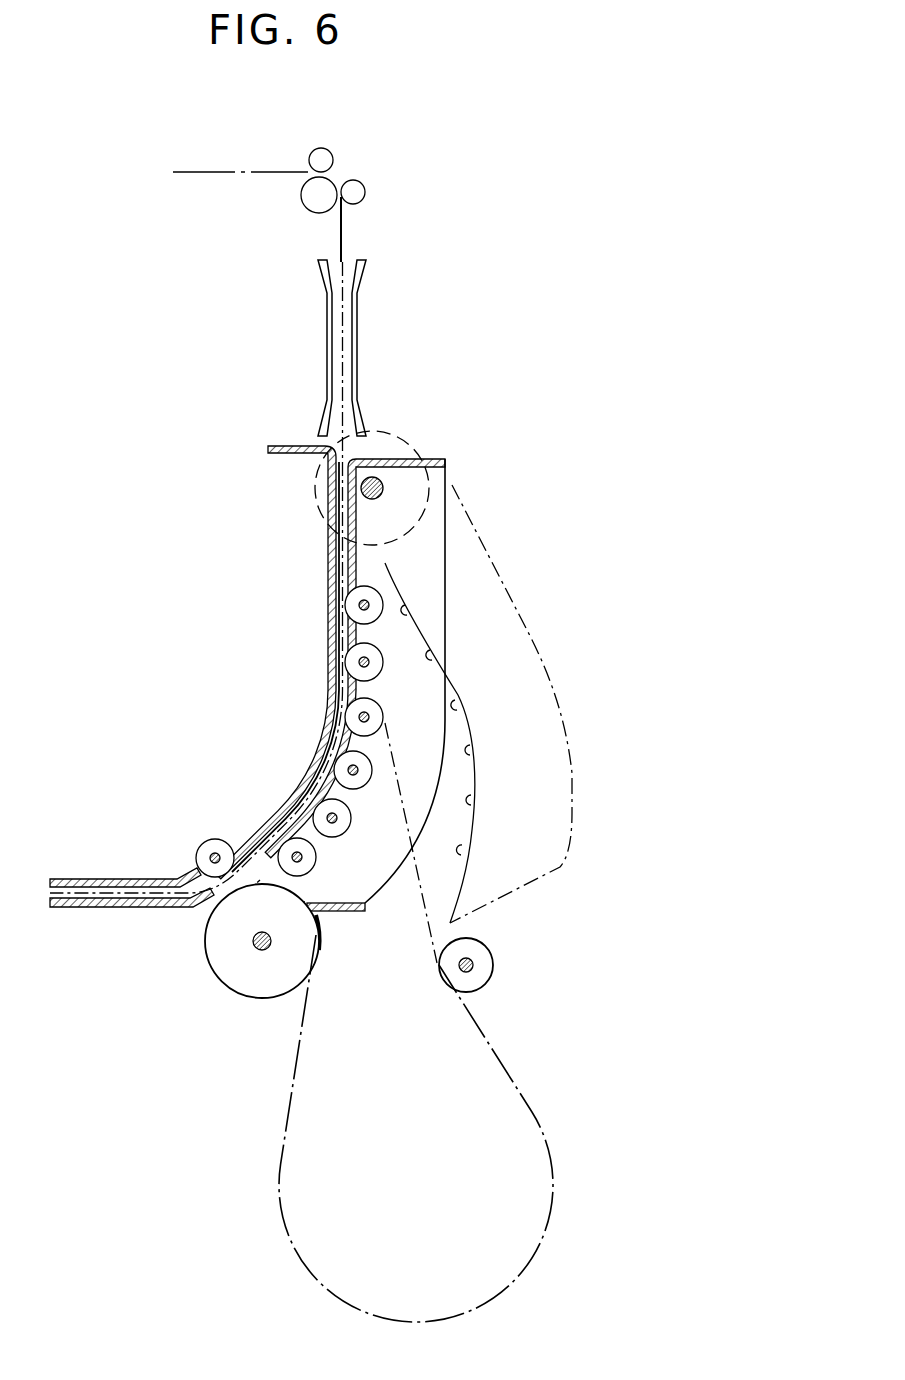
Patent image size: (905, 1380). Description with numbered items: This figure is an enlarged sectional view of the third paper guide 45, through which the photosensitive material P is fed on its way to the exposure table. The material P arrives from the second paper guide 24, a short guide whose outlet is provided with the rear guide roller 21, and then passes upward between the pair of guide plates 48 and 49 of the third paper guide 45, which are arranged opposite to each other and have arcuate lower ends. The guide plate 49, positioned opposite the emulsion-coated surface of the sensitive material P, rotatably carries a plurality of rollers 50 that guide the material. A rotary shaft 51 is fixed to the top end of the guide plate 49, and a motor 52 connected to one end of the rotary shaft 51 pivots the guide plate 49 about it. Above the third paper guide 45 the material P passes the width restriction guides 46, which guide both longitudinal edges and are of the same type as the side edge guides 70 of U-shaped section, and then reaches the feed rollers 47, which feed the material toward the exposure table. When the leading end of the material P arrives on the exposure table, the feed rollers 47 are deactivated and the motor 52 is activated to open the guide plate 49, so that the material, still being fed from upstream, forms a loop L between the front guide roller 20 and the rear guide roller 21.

The photosensitive material P is at (218, 172).
The feed rollers 47 is at (301, 207).
The side edge guides 70 is at (355, 313).
The width restriction guides 46 is at (323, 356).
The third paper guide 45 is at (325, 557).
The guide plate 49 is at (352, 568).
The guide plate 48 is at (330, 645).
The motor 52 is at (418, 493).
The rotary shaft 51 is at (380, 478).
The rollers 50 is at (363, 770).
The second paper guide 24 is at (105, 880).
The rear guide roller 21 is at (228, 958).
The front guide roller 20 is at (492, 960).
The loop L is at (287, 1143).